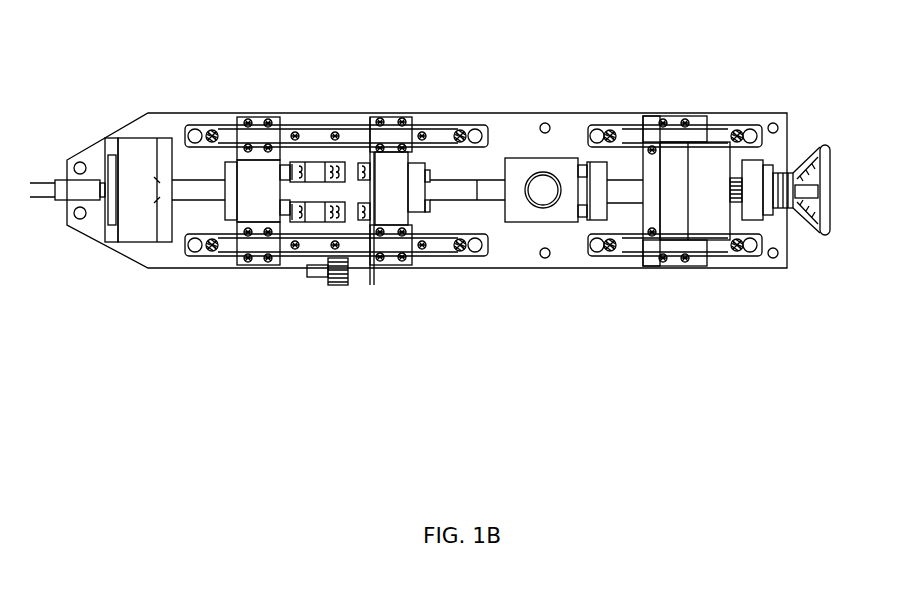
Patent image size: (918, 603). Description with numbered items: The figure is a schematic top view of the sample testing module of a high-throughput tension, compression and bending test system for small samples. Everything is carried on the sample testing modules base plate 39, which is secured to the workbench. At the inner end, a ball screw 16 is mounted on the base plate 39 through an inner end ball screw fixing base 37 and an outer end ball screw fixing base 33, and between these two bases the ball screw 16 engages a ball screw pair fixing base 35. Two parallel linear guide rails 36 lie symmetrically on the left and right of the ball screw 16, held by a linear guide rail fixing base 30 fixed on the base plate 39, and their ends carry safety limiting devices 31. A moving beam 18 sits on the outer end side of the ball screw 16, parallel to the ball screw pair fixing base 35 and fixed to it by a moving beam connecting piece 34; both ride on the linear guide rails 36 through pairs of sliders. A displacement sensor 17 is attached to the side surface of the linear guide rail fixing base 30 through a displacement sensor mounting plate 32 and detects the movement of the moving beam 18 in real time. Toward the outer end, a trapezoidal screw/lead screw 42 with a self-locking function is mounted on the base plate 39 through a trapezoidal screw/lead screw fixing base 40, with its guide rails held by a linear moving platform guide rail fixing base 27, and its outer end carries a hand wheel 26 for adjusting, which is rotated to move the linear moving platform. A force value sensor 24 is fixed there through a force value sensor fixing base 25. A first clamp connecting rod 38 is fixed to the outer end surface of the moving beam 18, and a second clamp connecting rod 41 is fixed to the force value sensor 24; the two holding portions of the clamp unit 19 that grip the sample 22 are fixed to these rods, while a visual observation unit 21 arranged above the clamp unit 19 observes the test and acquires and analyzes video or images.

The ball screw 16 is at (70, 187).
The displacement sensor 17 is at (337, 255).
The moving beam 18 is at (372, 226).
The clamp unit 19 is at (462, 190).
The visual observation unit 21 is at (550, 195).
The sample 22 is at (495, 190).
The force value sensor 24 is at (712, 213).
The force value sensor fixing base 25 is at (672, 220).
The hand wheel for adjusting 26 is at (823, 233).
The linear moving platform guide rail fixing base 27 is at (757, 222).
The linear guide rail fixing base 30 is at (285, 113).
The safety limiting device 31 is at (230, 228).
The displacement sensor mounting plate 32 is at (477, 51).
The outer end ball screw fixing base 33 is at (298, 167).
The moving beam connecting piece 34 is at (318, 190).
The ball screw pair fixing base 35 is at (270, 190).
The linear guide rail 36 is at (199, 133).
The inner end ball screw fixing base 37 is at (152, 227).
The first clamp connecting rod 38 is at (455, 190).
The sample testing modules base plate 39 is at (545, 123).
The trapezoidal screw/lead screw fixing base 40 is at (597, 129).
The second clamp connecting rod 41 is at (625, 195).
The trapezoidal screw/lead screw 42 is at (737, 135).